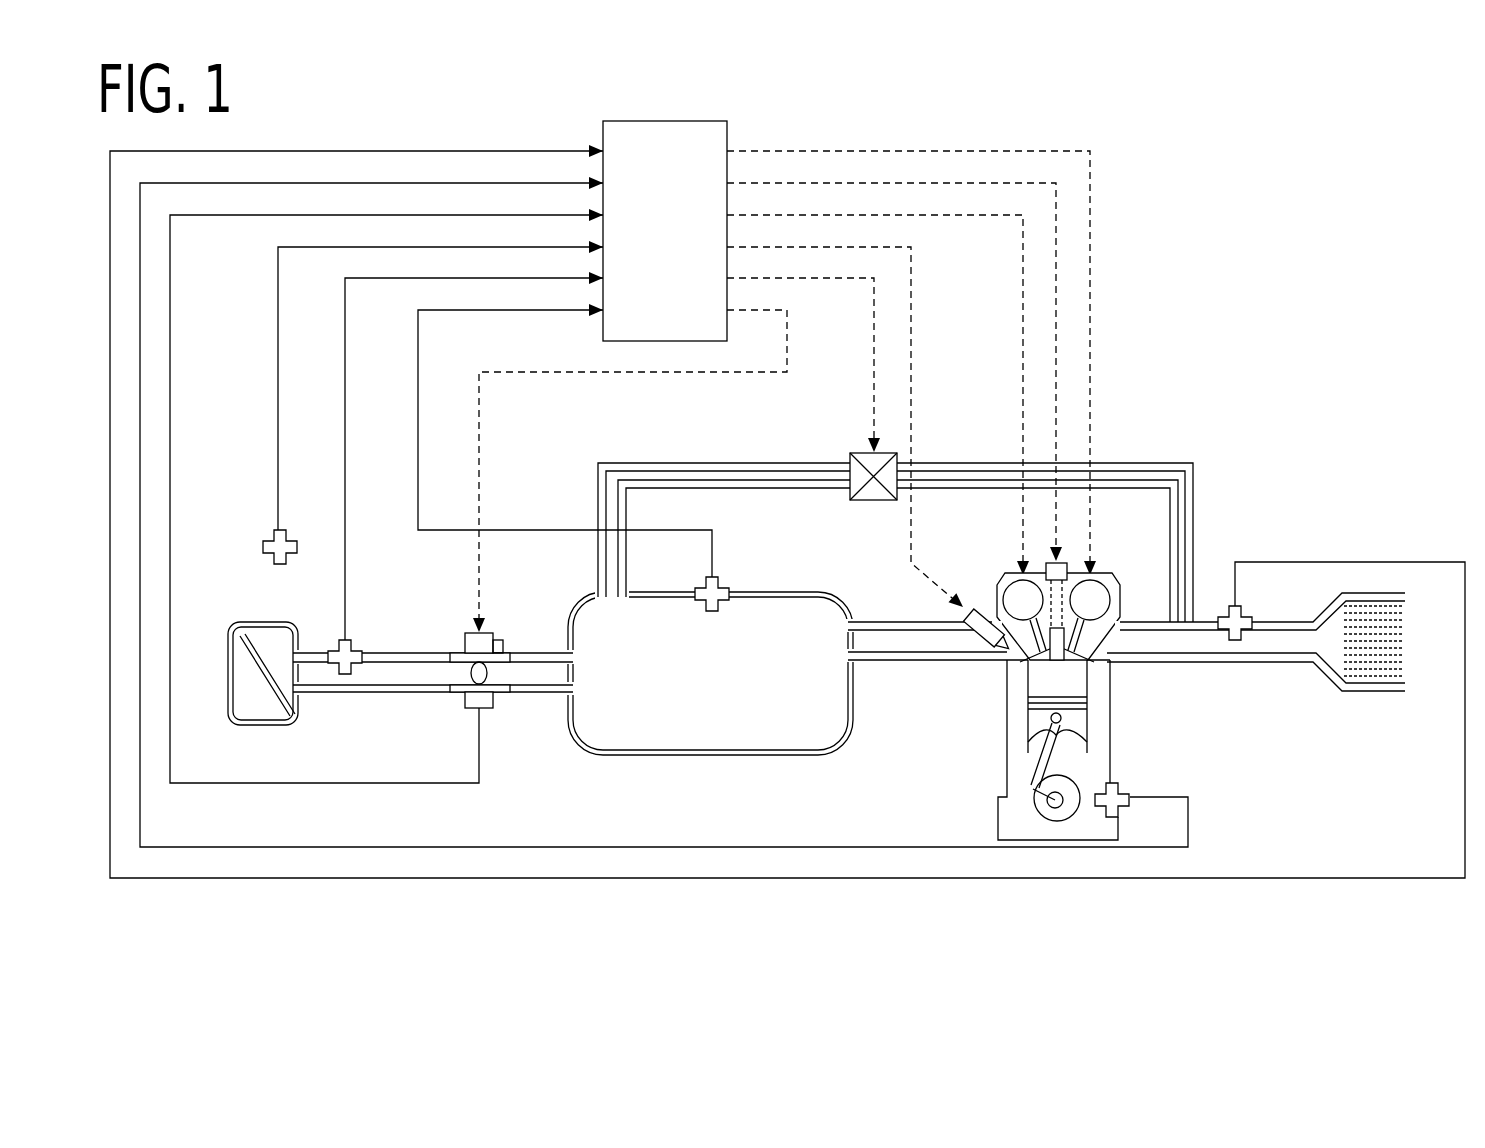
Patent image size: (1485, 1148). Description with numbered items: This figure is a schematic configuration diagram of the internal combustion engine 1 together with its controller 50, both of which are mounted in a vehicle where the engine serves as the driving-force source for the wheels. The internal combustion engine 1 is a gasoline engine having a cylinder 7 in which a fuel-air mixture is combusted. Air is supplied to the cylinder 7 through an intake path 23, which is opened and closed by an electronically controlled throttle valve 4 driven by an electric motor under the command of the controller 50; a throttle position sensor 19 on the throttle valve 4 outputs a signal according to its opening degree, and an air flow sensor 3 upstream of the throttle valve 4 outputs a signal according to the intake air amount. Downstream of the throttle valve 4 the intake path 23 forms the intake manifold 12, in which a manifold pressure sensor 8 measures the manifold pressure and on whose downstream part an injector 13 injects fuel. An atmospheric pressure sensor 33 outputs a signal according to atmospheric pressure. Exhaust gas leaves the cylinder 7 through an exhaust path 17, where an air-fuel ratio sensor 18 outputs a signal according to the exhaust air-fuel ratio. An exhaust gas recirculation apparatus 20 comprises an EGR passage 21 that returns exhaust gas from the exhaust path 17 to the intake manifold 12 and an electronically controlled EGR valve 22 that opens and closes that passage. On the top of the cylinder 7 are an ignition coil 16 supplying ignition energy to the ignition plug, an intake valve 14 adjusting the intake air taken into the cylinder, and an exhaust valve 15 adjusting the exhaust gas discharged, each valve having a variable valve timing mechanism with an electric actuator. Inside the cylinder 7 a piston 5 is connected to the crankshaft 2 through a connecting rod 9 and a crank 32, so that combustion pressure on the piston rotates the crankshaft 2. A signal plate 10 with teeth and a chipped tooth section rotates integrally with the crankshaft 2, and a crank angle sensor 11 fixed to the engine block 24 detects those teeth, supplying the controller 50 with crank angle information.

The internal combustion engine 1 is at (1144, 382).
The crankshaft 2 is at (1066, 678).
The air flow sensor 3 is at (355, 642).
The throttle valve 4 is at (497, 632).
The piston 5 is at (1040, 717).
The cylinder 7 is at (1088, 680).
The manifold pressure sensor 8 is at (727, 585).
The connecting rod 9 is at (1040, 755).
The signal plate 10 is at (1043, 840).
The crank angle sensor 11 is at (1125, 807).
The intake manifold 12 is at (737, 753).
The injector 13 is at (965, 645).
The intake valve 14 is at (1013, 597).
The exhaust valve 15 is at (1093, 595).
The ignition coil 16 is at (1067, 557).
The exhaust path 17 is at (1172, 642).
The air-fuel ratio sensor 18 is at (1250, 610).
The throttle position sensor 19 is at (497, 712).
The exhaust gas recirculation apparatus 20 is at (1174, 457).
The EGR passage 21 is at (1194, 478).
The EGR valve 22 is at (852, 465).
The intake path 23 is at (382, 677).
The engine block 24 is at (1118, 700).
The crank 32 is at (1037, 793).
The atmospheric pressure sensor 33 is at (280, 528).
The controller 50 is at (717, 140).